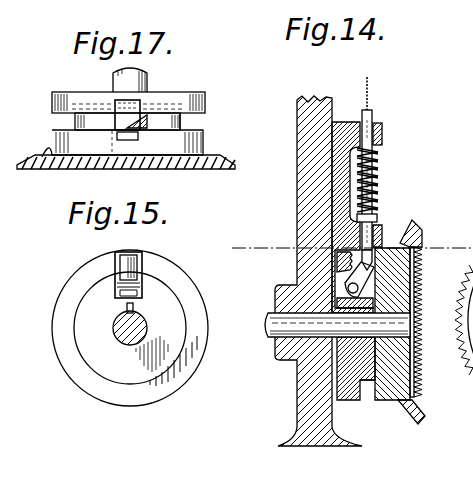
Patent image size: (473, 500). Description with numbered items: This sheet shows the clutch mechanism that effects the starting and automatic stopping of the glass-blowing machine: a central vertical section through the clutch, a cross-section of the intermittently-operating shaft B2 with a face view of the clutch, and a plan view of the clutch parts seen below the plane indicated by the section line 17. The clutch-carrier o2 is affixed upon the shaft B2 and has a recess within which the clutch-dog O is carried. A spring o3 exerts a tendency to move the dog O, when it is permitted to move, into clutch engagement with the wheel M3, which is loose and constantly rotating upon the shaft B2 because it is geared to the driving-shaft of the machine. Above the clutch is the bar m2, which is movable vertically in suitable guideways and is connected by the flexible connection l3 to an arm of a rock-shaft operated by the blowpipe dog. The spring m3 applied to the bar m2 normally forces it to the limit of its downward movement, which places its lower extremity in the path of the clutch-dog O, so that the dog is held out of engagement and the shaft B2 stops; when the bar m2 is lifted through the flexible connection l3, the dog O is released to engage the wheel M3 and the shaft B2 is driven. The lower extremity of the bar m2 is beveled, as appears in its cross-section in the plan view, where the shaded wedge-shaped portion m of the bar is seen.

In FIG. 17, the clutch-dog O is at (120, 117).
In FIG. 15, the clutch-dog O is at (115, 275).
In FIG. 14, the clutch-dog O is at (358, 278).
In FIG. 17, the shaft B2 is at (140, 90).
In FIG. 15, the shaft B2 is at (113, 328).
In FIG. 14, the shaft B2 is at (273, 338).
In FIG. 17, the wedge m is at (147, 120).
In FIG. 17, the clutch-carrier o2 is at (180, 118).
In FIG. 15, the clutch-carrier o2 is at (130, 328).
In FIG. 14, the clutch-carrier o2 is at (350, 395).
In FIG. 17, the wheel M3 is at (134, 130).
In FIG. 14, the wheel M3 is at (424, 322).
In FIG. 14, the flexible connection l3 is at (370, 100).
In FIG. 14, the bar m2 is at (383, 128).
In FIG. 14, the spring m3 is at (378, 165).
In FIG. 14, the spring o3 is at (345, 263).
In FIG. 14, the section line 17- 17 is at (342, 245).